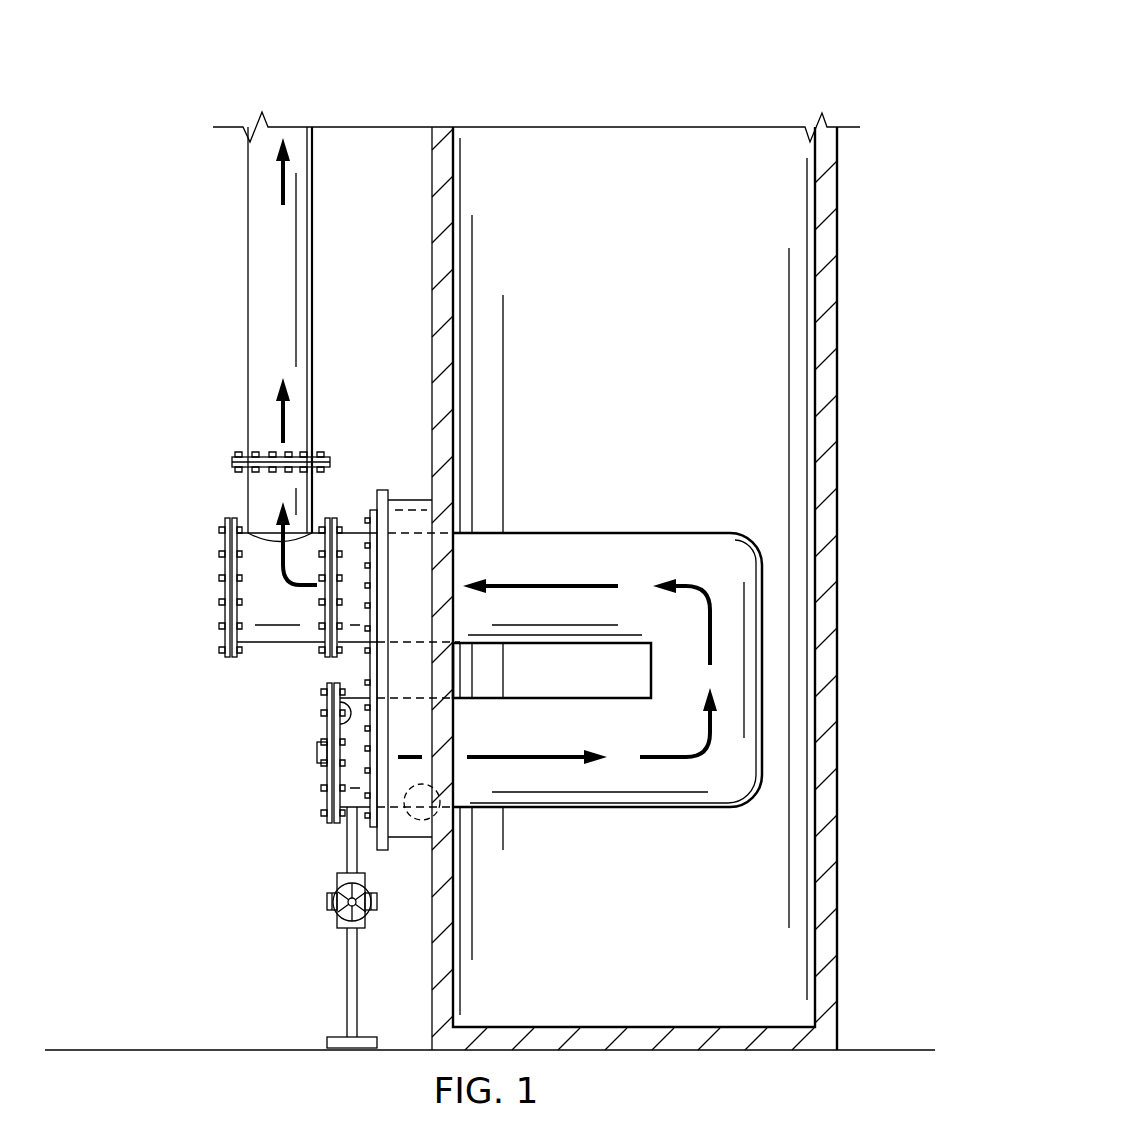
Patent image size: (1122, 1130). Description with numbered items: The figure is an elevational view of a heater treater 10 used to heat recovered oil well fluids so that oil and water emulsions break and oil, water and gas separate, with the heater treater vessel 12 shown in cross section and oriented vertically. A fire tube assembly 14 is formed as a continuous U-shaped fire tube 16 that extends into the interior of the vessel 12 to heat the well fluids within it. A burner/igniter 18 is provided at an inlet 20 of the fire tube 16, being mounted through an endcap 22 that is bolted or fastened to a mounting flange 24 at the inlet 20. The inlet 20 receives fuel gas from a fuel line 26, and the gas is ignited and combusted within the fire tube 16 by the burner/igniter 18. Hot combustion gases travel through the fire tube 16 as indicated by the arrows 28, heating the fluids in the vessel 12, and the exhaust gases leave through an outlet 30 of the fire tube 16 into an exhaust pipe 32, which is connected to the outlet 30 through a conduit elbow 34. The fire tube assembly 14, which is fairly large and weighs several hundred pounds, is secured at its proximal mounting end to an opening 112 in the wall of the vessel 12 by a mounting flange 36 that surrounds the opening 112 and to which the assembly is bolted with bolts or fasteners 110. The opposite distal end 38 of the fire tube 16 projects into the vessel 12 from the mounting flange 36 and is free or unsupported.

The heater treater 10 is at (745, 55).
The heater treater vessel 12 is at (850, 365).
The fire tube assembly 14 is at (694, 528).
The fire tube 16 is at (605, 533).
The burner/igniter 18 is at (317, 752).
The inlet 20 is at (348, 777).
The endcap 22 is at (326, 805).
The mounting flange 24 is at (326, 699).
The fuel line 26 is at (347, 983).
The arrows 28 is at (527, 757).
The outlet 30 is at (355, 541).
The exhaust pipe 32 is at (256, 295).
The conduit elbow 34 is at (246, 565).
The mounting flange 36 is at (387, 546).
The distal end 38 is at (763, 712).
The bolts or fasteners 110 is at (365, 606).
The opening 112 is at (415, 820).